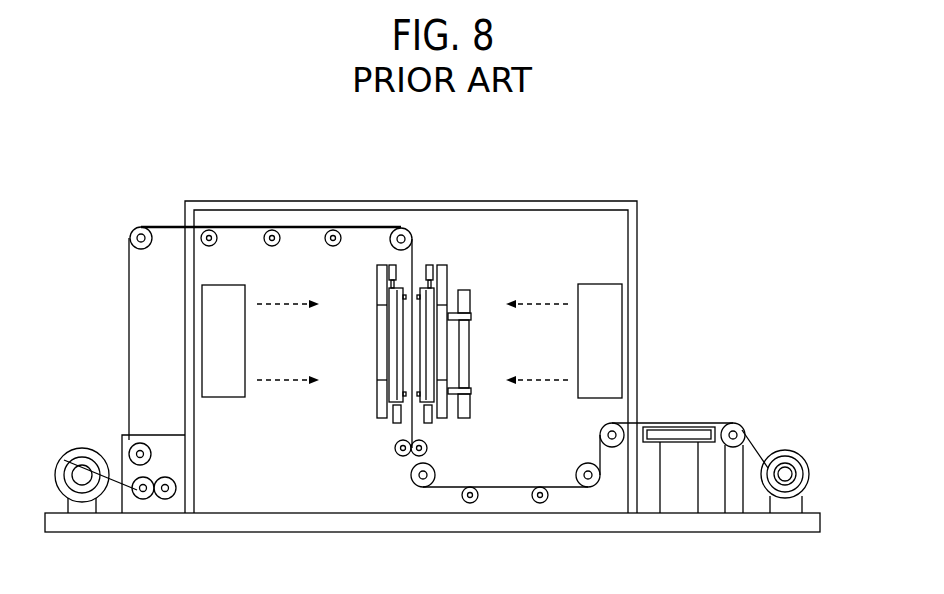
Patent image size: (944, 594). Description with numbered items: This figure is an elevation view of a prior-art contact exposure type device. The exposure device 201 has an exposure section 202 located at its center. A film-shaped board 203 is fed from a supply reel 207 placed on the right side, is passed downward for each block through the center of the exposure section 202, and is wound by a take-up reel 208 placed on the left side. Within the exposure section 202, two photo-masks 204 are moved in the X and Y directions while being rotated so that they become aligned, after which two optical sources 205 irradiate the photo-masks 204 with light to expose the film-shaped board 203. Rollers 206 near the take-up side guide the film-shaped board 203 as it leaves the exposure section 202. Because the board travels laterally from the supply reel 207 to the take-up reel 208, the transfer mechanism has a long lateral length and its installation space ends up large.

The exposure device 201 is at (540, 190).
The exposure section 202 is at (428, 252).
The film-shaped board 203 is at (403, 428).
The photo-masks 204 is at (404, 352).
The optical sources 205 is at (224, 398).
The feed rollers 206 is at (144, 500).
The supply reel 207 is at (798, 455).
The take-up reel 208 is at (72, 453).